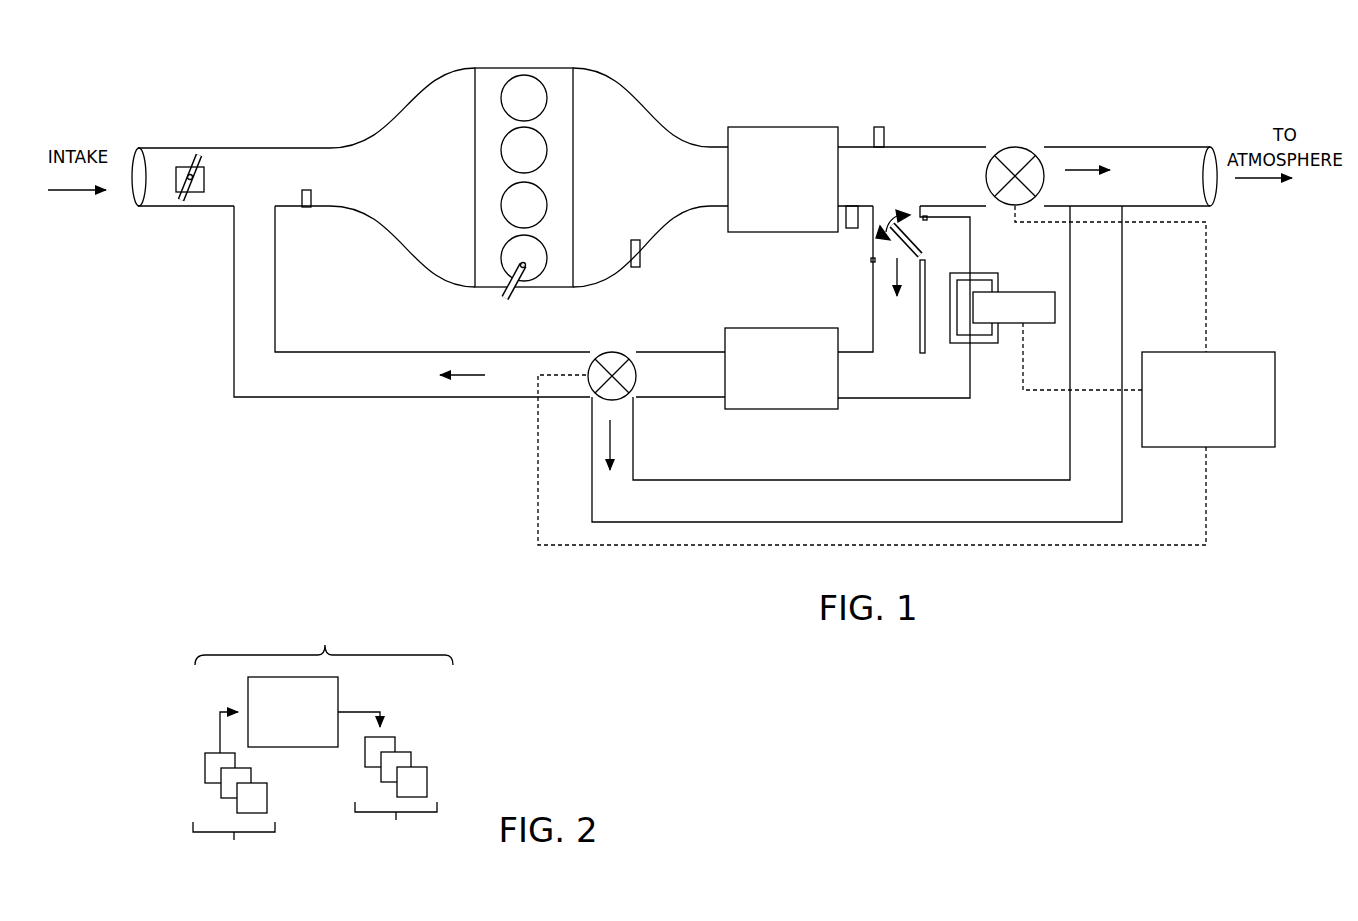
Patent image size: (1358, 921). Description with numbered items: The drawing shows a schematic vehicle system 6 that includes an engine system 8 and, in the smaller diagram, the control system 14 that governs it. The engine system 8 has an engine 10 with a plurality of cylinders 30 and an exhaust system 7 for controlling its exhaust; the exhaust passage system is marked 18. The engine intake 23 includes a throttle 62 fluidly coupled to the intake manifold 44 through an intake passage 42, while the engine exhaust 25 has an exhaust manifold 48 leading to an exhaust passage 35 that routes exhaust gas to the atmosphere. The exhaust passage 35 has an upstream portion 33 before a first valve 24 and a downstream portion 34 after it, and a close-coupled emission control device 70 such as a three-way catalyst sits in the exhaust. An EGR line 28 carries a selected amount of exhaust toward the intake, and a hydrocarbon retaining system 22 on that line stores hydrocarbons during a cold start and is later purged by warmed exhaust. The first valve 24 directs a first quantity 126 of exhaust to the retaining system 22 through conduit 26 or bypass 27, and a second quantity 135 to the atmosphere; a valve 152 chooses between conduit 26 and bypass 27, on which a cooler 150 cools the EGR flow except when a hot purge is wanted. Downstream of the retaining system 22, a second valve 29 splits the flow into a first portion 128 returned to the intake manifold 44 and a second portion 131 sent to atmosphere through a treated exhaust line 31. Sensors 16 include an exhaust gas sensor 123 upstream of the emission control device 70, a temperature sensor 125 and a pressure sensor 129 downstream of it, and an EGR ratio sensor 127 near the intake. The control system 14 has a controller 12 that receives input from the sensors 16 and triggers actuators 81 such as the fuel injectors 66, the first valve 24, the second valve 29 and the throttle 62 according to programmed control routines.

In FIG. 1, the vehicle system 6 is at (156, 70).
In FIG. 2, the vehicle system 6 is at (178, 612).
In FIG. 1, the exhaust system 7 is at (164, 470).
In FIG. 1, the engine system 8 is at (698, 62).
In FIG. 1, the engine 10 is at (573, 160).
In FIG. 1, the controller 12 is at (1222, 352).
In FIG. 2, the controller 12 is at (293, 712).
In FIG. 2, the control system 14 is at (324, 633).
In FIG. 2, the sensors 16 is at (234, 794).
In FIG. 1, the exhaust passage system 18 is at (1040, 622).
In FIG. 1, the retaining system 22 is at (725, 340).
In FIG. 1, the engine intake 23 is at (282, 132).
In FIG. 1, the first valve 24 is at (1020, 147).
In FIG. 1, the engine exhaust 25 is at (932, 88).
In FIG. 1, the conduit 26 is at (872, 279).
In FIG. 1, the bypass 27 is at (904, 302).
In FIG. 1, the EGR line 28 is at (412, 301).
In FIG. 1, the second valve 29 is at (612, 352).
In FIG. 1, the cylinders 30 is at (542, 92).
In FIG. 1, the treated exhaust line 31 is at (857, 364).
In FIG. 1, the upstream portion 33 is at (1024, 176).
In FIG. 1, the downstream portion 34 is at (1179, 176).
In FIG. 1, the exhaust passage 35 is at (934, 147).
In FIG. 1, the intake passage 42 is at (183, 203).
In FIG. 1, the intake manifold 44 is at (402, 177).
In FIG. 1, the exhaust manifold 48 is at (650, 177).
In FIG. 1, the throttle 62 is at (197, 153).
In FIG. 1, the fuel injectors 66 is at (512, 292).
In FIG. 1, the emission control device 70 is at (800, 125).
In FIG. 2, the actuators 81 is at (387, 785).
In FIG. 1, the exhaust gas sensor 123 is at (640, 245).
In FIG. 1, the temperature sensor 125 is at (852, 229).
In FIG. 1, the first quantity 126 is at (892, 278).
In FIG. 1, the EGR ratio sensor 127 is at (307, 207).
In FIG. 1, the first portion 128 is at (470, 378).
In FIG. 1, the pressure sensor 129 is at (872, 136).
In FIG. 1, the second portion 131 is at (612, 445).
In FIG. 1, the second quantity 135 is at (1083, 167).
In FIG. 1, the cooler 150 is at (1036, 292).
In FIG. 1, the valve 152 is at (910, 238).